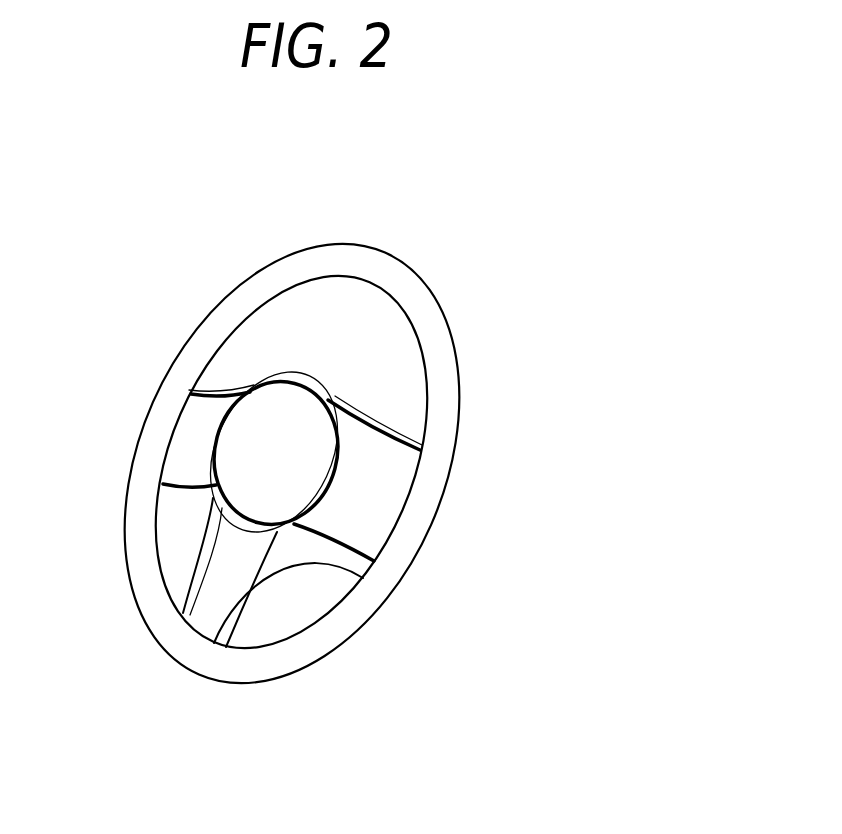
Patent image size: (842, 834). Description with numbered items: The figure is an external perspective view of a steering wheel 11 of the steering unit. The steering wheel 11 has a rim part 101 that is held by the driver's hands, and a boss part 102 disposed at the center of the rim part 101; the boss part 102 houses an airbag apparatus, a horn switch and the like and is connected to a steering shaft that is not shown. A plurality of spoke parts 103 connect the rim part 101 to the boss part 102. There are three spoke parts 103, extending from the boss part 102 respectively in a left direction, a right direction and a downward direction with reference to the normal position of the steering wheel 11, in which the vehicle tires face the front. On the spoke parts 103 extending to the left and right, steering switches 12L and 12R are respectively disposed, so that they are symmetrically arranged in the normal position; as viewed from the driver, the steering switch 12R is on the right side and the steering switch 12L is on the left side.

The steering wheel 11 is at (447, 253).
The rim part 101 is at (438, 340).
The boss part 102 is at (288, 407).
The steering switch 12L is at (183, 434).
The steering switch 12R is at (380, 512).
The spoke parts 103 is at (213, 390).